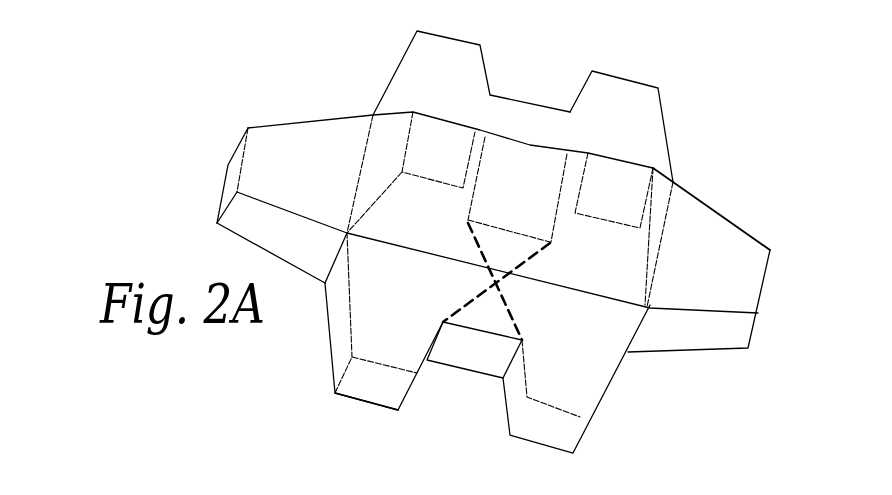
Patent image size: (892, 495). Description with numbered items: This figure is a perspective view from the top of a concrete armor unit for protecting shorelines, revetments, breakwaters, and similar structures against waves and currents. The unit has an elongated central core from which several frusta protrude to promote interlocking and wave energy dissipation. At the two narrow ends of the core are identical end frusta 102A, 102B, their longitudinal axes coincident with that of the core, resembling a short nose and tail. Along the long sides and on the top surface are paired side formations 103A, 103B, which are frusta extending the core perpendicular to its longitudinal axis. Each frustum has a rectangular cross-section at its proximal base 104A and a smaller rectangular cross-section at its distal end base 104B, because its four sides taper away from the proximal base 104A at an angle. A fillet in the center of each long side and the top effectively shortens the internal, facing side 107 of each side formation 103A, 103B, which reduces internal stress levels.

The end frustum 102A is at (247, 127).
The end frustum 102B is at (703, 222).
The side formation 103A is at (427, 70).
The side formation 103B is at (631, 114).
The proximal base 104A is at (581, 302).
The distal end base 104B is at (221, 183).
The internal side 107 is at (464, 394).